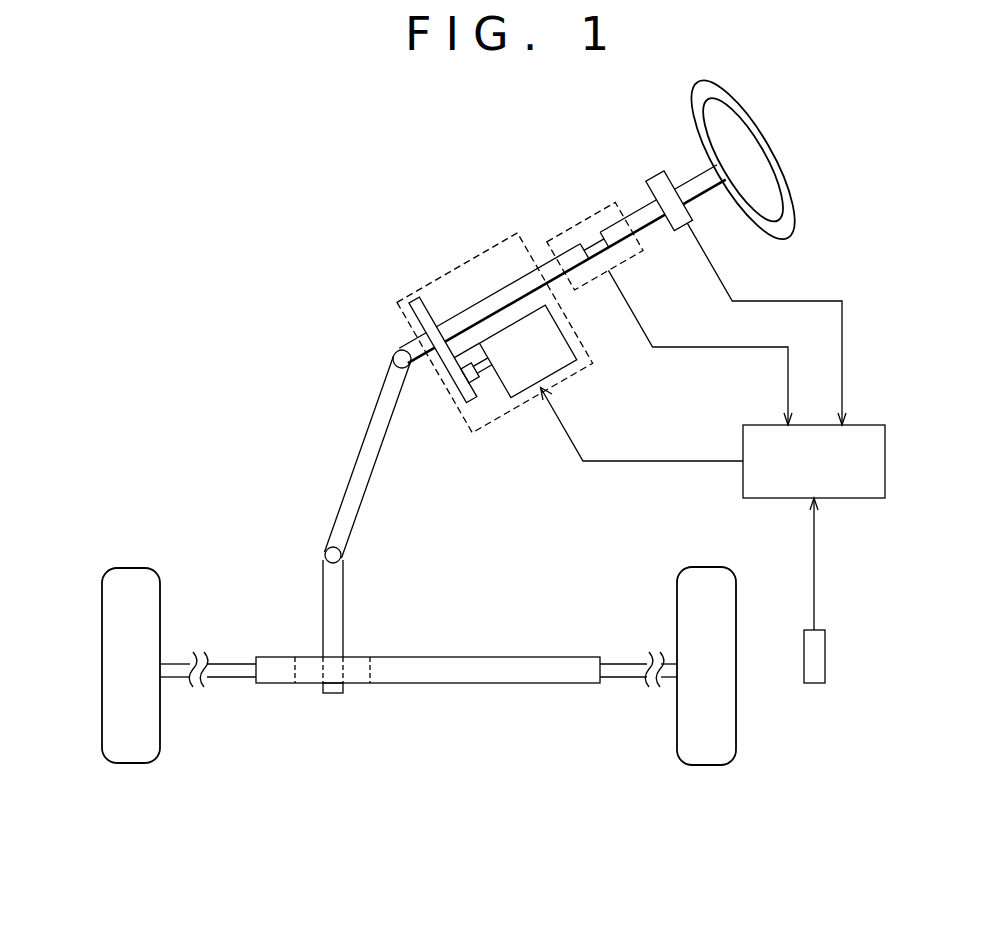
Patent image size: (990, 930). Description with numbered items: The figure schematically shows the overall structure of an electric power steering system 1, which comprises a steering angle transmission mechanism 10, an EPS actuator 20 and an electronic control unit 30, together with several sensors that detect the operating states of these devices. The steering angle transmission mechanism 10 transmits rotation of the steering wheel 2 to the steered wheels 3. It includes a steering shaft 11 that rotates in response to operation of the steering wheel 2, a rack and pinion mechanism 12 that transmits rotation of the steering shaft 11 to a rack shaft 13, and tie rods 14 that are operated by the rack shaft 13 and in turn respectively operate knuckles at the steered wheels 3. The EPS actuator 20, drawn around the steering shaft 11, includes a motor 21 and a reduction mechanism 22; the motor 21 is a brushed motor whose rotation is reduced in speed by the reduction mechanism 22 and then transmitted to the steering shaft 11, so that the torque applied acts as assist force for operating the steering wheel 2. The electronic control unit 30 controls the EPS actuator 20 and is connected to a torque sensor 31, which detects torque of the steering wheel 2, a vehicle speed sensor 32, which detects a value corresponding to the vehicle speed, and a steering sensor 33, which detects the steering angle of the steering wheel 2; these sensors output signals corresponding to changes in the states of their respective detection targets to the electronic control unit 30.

The electric power steering system 1 is at (186, 279).
The steering wheel 2 is at (788, 180).
The steered wheels 3 is at (132, 567).
The steering angle transmission mechanism 10 is at (281, 348).
The steering shaft 11 is at (367, 428).
The rack and pinion mechanism 12 is at (361, 662).
The rack shaft 13 is at (440, 657).
The tie rods 14 is at (225, 662).
The EPS actuator 20 is at (570, 335).
The motor 21 is at (527, 390).
The reduction mechanism 22 is at (457, 393).
The electronic control unit 30 is at (887, 460).
The torque sensor 31 is at (602, 203).
The vehicle speed sensor 32 is at (826, 655).
The steering sensor 33 is at (652, 172).